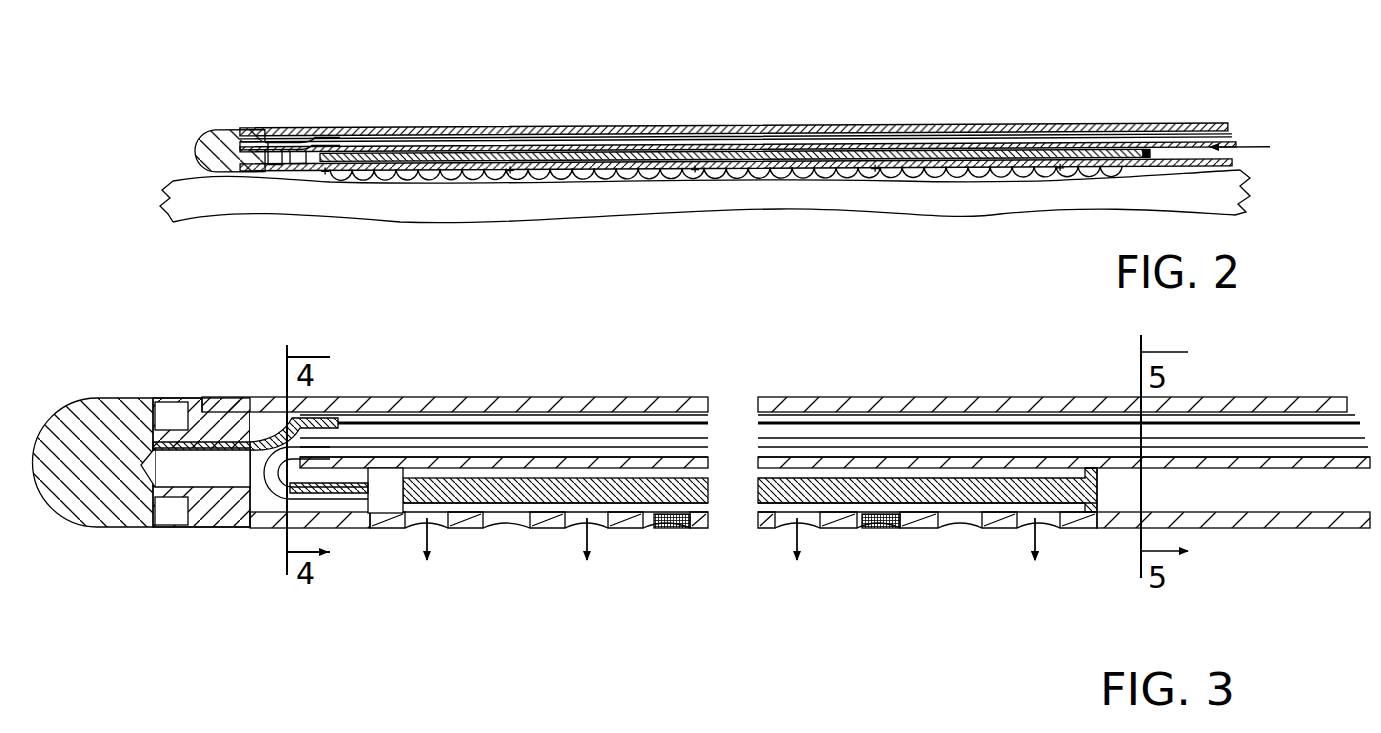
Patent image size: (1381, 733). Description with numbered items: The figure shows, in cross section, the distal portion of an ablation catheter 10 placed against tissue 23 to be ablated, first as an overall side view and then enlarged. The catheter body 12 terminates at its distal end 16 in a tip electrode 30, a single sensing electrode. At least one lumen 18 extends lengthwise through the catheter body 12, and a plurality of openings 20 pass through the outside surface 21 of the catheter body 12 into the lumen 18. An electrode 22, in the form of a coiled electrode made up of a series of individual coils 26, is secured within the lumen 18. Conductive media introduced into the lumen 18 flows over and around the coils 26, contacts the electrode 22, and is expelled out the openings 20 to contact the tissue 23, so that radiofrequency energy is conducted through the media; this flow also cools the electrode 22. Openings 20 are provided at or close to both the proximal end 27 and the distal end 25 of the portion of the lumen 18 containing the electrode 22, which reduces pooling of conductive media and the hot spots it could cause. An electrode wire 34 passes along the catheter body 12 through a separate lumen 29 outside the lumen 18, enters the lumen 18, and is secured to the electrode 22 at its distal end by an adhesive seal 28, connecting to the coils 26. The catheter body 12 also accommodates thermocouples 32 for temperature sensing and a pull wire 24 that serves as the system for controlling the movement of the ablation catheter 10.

In FIG. 2, the ablation catheter 10 is at (528, 66).
In FIG. 3, the ablation catheter 10 is at (480, 660).
In FIG. 2, the catheter body 12 is at (734, 129).
In FIG. 3, the catheter body 12 is at (1262, 403).
In FIG. 2, the distal end 16 is at (243, 90).
In FIG. 2, the lumen 18 is at (1182, 152).
In FIG. 3, the lumen 18 is at (470, 478).
In FIG. 2, the openings 20 is at (675, 162).
In FIG. 3, the openings 20 is at (960, 530).
In FIG. 3, the outside surface 21 is at (410, 398).
In FIG. 2, the electrode 22 is at (866, 165).
In FIG. 3, the electrode 22 is at (925, 480).
In FIG. 2, the tissue 23 is at (1053, 180).
In FIG. 2, the pull wire 24 is at (315, 122).
In FIG. 3, the pull wire 24 is at (178, 440).
In FIG. 3, the distal end 25 is at (410, 467).
In FIG. 3, the coils 26 is at (1080, 510).
In FIG. 3, the proximal end 27 is at (1108, 486).
In FIG. 3, the adhesive seal 28 is at (385, 500).
In FIG. 3, the lumen 29 is at (608, 430).
In FIG. 2, the tip electrode 30 is at (205, 130).
In FIG. 3, the tip electrode 30 is at (115, 412).
In FIG. 3, the thermocouples 32 is at (675, 528).
In FIG. 3, the electrode wire 34 is at (330, 497).